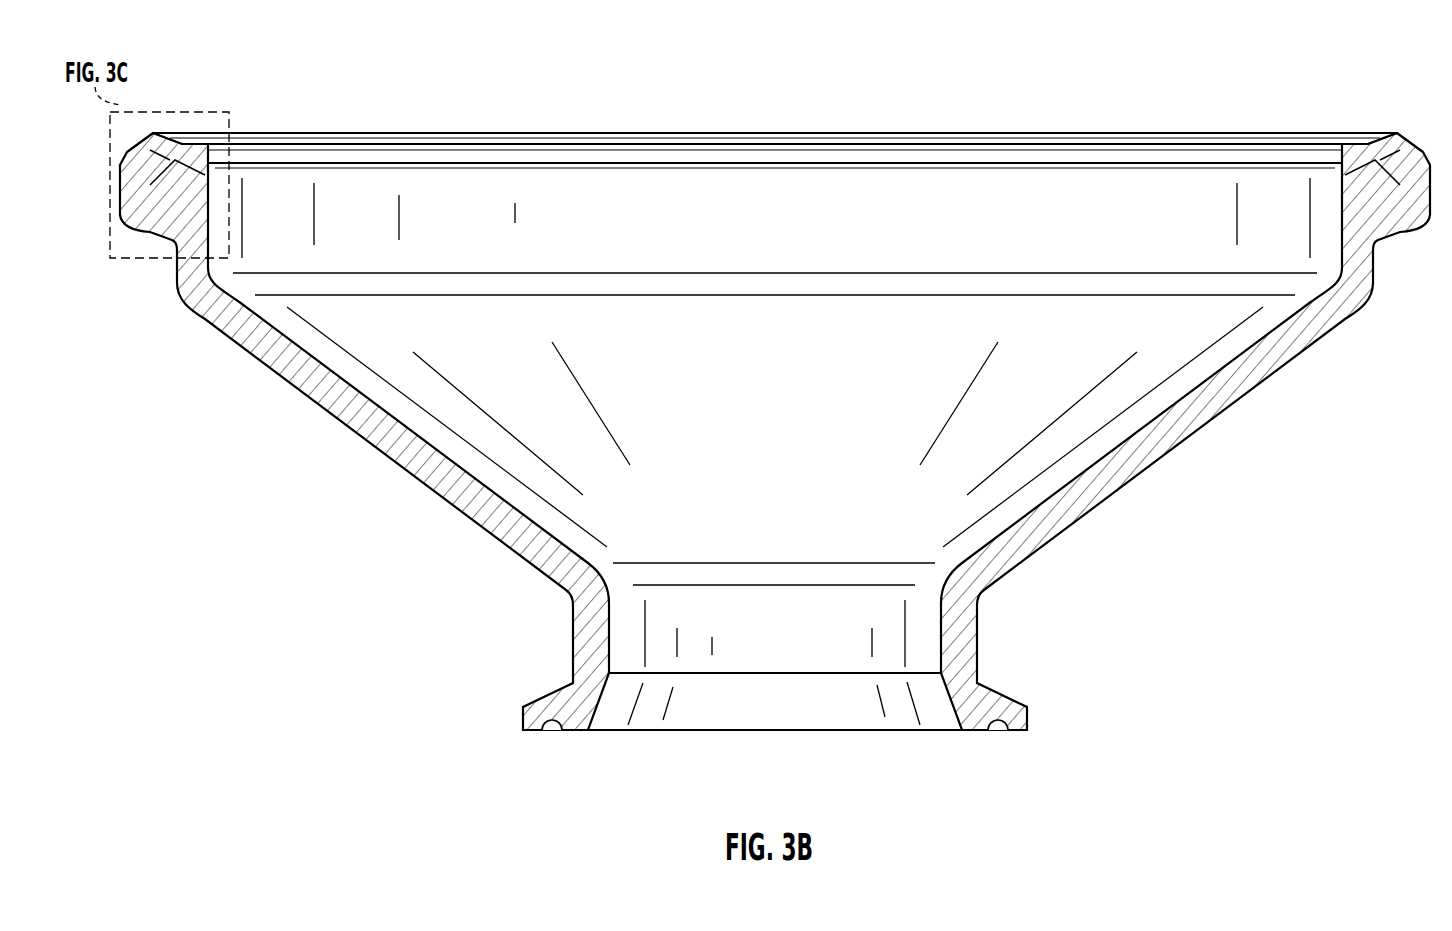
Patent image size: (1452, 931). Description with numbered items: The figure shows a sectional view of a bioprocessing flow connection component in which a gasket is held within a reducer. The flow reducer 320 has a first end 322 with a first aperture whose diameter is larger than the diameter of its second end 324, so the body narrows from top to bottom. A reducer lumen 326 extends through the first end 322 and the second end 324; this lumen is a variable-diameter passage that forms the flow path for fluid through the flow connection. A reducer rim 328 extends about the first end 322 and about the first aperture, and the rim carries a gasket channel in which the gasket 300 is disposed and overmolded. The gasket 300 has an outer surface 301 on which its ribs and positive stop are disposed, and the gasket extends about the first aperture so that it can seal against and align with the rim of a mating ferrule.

The gasket 300 is at (483, 131).
The outer surface 301 is at (1372, 133).
The flow reducer 320 is at (413, 480).
The first end 322 is at (790, 163).
The second end 324 is at (535, 731).
The reducer lumen 326 is at (680, 461).
The reducer rim 328 is at (860, 168).